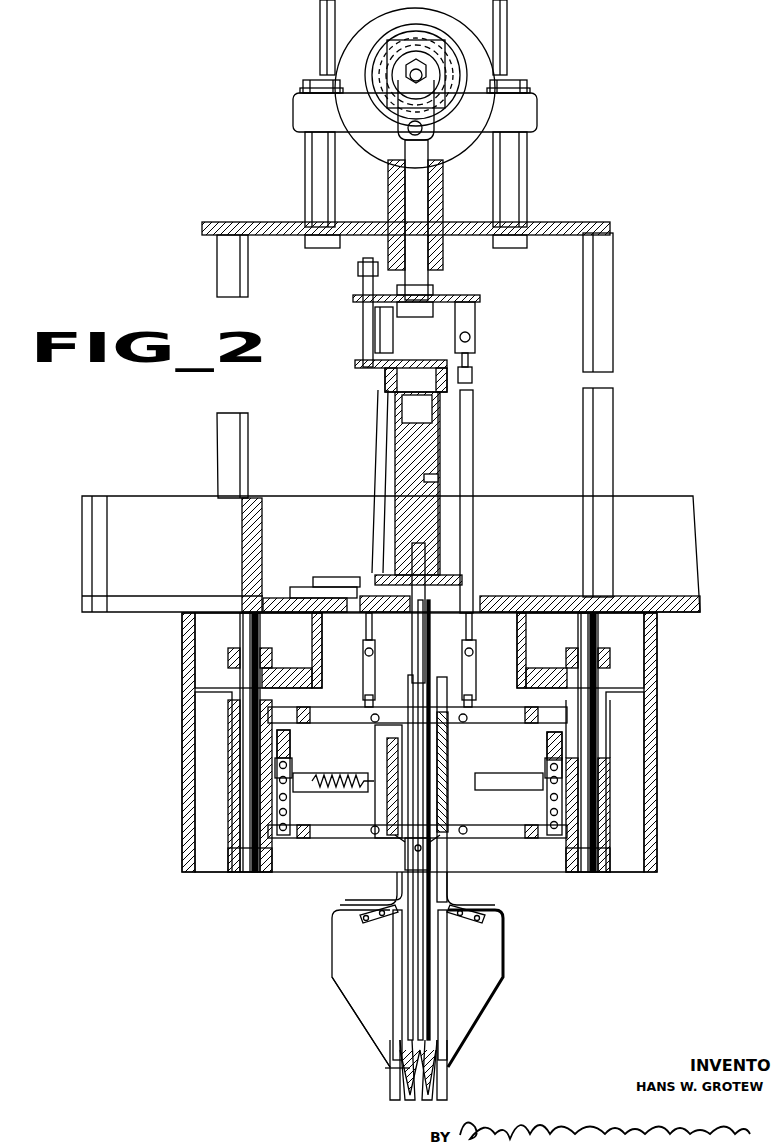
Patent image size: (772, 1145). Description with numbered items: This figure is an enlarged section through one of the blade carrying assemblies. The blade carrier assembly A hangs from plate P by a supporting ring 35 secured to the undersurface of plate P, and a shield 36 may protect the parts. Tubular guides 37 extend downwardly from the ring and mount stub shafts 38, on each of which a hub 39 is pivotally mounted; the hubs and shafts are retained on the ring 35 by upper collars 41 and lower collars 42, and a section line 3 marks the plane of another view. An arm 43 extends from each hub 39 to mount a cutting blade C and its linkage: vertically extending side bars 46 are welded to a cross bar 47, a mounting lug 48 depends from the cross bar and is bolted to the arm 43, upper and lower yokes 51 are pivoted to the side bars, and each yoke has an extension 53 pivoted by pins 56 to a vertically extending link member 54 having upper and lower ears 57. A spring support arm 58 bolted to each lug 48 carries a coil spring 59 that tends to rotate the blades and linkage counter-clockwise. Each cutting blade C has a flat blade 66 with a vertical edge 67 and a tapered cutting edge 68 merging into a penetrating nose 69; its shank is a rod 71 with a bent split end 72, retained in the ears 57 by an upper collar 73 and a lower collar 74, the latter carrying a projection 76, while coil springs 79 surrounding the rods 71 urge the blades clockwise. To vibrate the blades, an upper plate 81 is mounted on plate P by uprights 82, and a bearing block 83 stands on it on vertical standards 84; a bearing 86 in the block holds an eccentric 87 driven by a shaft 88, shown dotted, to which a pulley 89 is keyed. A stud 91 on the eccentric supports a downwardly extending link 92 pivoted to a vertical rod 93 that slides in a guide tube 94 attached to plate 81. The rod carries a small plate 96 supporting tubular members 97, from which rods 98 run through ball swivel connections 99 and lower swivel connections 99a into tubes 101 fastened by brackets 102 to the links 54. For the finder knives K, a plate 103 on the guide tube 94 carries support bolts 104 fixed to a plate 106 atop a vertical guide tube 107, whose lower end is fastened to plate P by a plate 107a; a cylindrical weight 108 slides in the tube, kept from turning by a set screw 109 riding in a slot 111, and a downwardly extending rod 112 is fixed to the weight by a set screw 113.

The section line 3 is at (216, 750).
The supporting ring 35 is at (318, 630).
The shield 36 is at (657, 810).
The tubular guides 37 is at (233, 700).
The stub shafts 38 is at (250, 640).
The hub 39 is at (232, 812).
The upper collars 41 is at (272, 656).
The lower collars 42 is at (232, 872).
The arm 43 is at (547, 800).
The side bars 46 is at (418, 750).
The cross bar 47 is at (419, 778).
The mounting lug 48 is at (419, 799).
The yokes 51 is at (418, 777).
The extension 53 is at (318, 718).
The link member 54 is at (377, 733).
The pins 56 is at (415, 762).
The ears 57 is at (410, 700).
The spring support arm 58 is at (417, 775).
The coil spring 59 is at (425, 773).
The flat blade 66 is at (378, 999).
The vertical edge 67 is at (398, 965).
The tapered cutting edge 68 is at (357, 1027).
The penetrating nose 69 is at (392, 1085).
The rod 71 is at (440, 680).
The bent split end 72 is at (370, 925).
The upper collar 73 is at (385, 815).
The lower collar 74 is at (403, 850).
The projection 76 is at (400, 840).
The coil springs 79 is at (390, 760).
The upper plate 81 is at (575, 224).
The uprights 82 is at (220, 265).
The bearing block 83 is at (300, 112).
The vertical standards 84 is at (315, 182).
The bearing 86 is at (448, 70).
The eccentric 87 is at (440, 112).
The shaft 88 is at (436, 88).
The pulley 89 is at (362, 53).
The stud 91 is at (420, 64).
The link 92 is at (392, 93).
The vertical rod 93 is at (410, 157).
The guide tube 94 is at (395, 205).
The small plate 96 is at (466, 298).
The tubular members 97 is at (393, 343).
The rods 98 is at (373, 440).
The ball swivel connections 99 is at (470, 338).
The swivel connections 99a is at (365, 645).
The tubes 101 is at (363, 667).
The brackets 102 is at (478, 675).
The plate 103 is at (465, 268).
The support bolts 104 is at (365, 312).
The plate 106 is at (358, 362).
The vertical guide tube 107 is at (398, 458).
The plate 107a is at (380, 575).
The cylindrical weight 108 is at (430, 462).
The set screw 109 is at (440, 478).
The slot 111 is at (440, 425).
The rod 112 is at (418, 628).
The set screw 113 is at (440, 562).
The blade carrier assembly A is at (672, 725).
The cutting blade C is at (324, 983).
The finder knives K is at (428, 1114).
The plate P is at (690, 603).